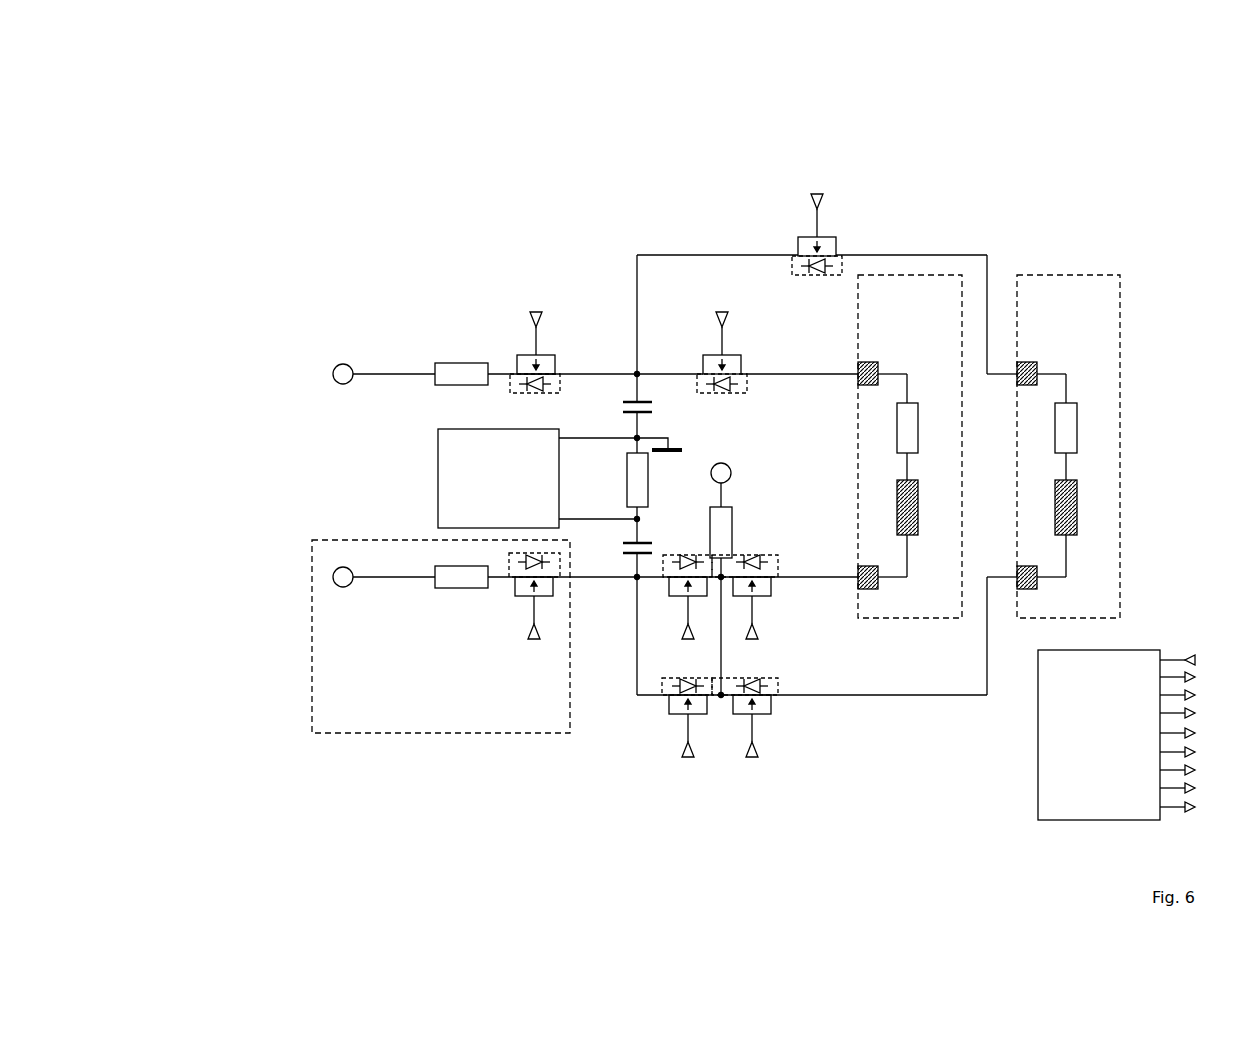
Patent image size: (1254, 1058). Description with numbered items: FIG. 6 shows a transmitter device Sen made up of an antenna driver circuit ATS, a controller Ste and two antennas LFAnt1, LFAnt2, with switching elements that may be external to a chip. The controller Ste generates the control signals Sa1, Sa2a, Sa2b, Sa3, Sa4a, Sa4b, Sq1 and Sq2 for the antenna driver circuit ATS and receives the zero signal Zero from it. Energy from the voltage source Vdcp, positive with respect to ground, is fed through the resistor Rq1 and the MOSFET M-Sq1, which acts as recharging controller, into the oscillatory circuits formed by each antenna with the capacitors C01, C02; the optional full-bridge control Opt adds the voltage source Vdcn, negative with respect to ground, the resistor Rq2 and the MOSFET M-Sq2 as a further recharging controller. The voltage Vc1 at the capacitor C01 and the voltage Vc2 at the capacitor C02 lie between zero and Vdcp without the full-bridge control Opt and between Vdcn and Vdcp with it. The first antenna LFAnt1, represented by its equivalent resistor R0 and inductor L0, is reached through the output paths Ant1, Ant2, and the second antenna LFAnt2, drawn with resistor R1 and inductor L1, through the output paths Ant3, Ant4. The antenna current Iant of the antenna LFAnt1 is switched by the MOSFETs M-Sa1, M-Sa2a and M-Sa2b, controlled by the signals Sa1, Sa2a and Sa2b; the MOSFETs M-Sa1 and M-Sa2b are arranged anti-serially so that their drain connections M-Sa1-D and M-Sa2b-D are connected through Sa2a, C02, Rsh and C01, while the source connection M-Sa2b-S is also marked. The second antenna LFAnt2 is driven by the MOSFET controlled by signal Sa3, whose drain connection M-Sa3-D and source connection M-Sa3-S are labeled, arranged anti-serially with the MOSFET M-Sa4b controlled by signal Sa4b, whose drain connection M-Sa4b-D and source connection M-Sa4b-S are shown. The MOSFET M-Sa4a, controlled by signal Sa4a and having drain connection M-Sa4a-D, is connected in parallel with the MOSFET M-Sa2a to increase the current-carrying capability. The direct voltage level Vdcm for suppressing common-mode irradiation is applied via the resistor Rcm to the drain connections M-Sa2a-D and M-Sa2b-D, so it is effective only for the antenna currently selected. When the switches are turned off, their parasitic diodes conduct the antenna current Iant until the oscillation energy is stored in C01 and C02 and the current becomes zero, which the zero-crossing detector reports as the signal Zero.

The transmitter device Sen is at (259, 118).
The antenna driver circuit ATS is at (340, 285).
The voltage source Vdcp is at (339, 362).
The resistor Rq1 is at (461, 387).
The switch signal / transistor Sq1 is at (535, 339).
The MOSFET M-Sq1 is at (553, 360).
The control signal Sa1 is at (722, 340).
The MOSFET M-Sa1 is at (740, 362).
The drain connection M-Sa1-D is at (702, 370).
The control signal Sa3 is at (817, 226).
The drain connection M-Sa3-D is at (796, 254).
The source of MOSFET Sa3 M-Sa3-S is at (836, 254).
The antenna current Iant is at (826, 363).
The voltage at capacitor C01 Vc1 is at (616, 390).
The capacitor C01 is at (656, 413).
The resistor Rsh is at (655, 480).
The capacitor C02 is at (651, 534).
The voltage at capacitor C02 Vc2 is at (616, 525).
The direct voltage level Vdcm is at (717, 462).
The common mode resistor Rcm is at (743, 532).
The zero signal Zero is at (438, 480).
The full-bridge control Opt is at (441, 636).
The voltage source Vdcn is at (340, 565).
The resistor Rq2 is at (461, 591).
The switch signal / transistor Sq2 is at (534, 609).
The MOSFET M-Sq2 is at (523, 590).
The control signal Sa2a is at (687, 604).
The control signal Sa2b is at (745, 604).
The MOSFET M-Sa2a is at (672, 593).
The MOSFET M-Sa2b is at (775, 590).
The source of MOSFET Sa2b M-Sa2b-S is at (760, 598).
The drain connection M-Sa2b-D is at (742, 597).
The drain connection M-Sa2a-D is at (722, 583).
The control signal Sa4a is at (687, 724).
The control signal Sa4b is at (745, 724).
The MOSFET M-Sa4a is at (695, 692).
The MOSFET M-Sa4b is at (753, 693).
The source of MOSFET Sa4b M-Sa4b-S is at (765, 705).
The drain connection M-Sa4b-D is at (745, 712).
The drain of MOSFET Sa4a M-Sa4a-D is at (722, 700).
The first antenna LFAnt1 is at (962, 292).
The second antenna LFAnt2 is at (1058, 275).
The output path Ant1 is at (880, 364).
The output path Ant2 is at (880, 590).
The output path Ant3 is at (1039, 364).
The output path Ant4 is at (1039, 590).
The resistor R0 is at (921, 428).
The inductor L0 is at (920, 507).
The antenna resistance R1 is at (1080, 428).
The antenna inductance L1 is at (1078, 507).
The controller Ste is at (1132, 735).